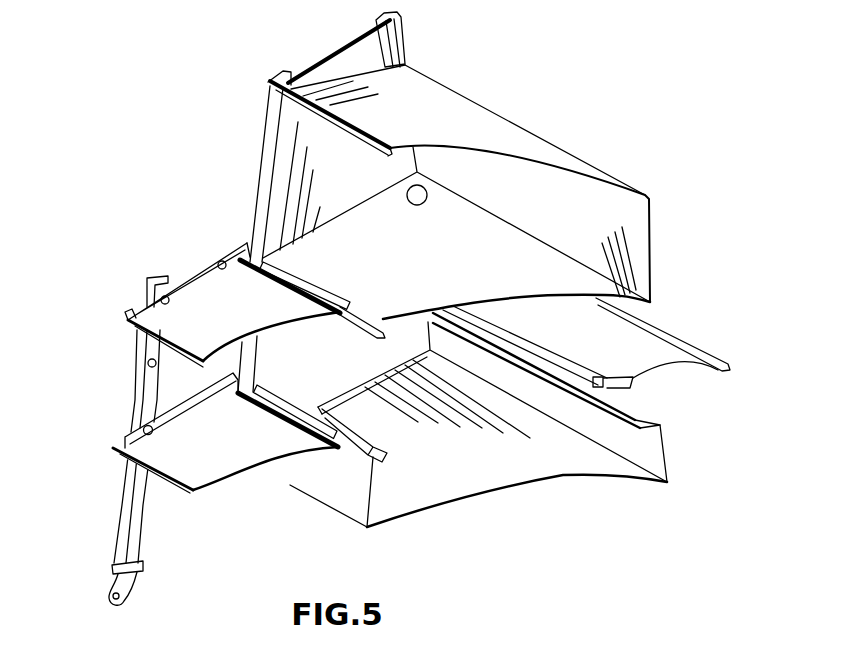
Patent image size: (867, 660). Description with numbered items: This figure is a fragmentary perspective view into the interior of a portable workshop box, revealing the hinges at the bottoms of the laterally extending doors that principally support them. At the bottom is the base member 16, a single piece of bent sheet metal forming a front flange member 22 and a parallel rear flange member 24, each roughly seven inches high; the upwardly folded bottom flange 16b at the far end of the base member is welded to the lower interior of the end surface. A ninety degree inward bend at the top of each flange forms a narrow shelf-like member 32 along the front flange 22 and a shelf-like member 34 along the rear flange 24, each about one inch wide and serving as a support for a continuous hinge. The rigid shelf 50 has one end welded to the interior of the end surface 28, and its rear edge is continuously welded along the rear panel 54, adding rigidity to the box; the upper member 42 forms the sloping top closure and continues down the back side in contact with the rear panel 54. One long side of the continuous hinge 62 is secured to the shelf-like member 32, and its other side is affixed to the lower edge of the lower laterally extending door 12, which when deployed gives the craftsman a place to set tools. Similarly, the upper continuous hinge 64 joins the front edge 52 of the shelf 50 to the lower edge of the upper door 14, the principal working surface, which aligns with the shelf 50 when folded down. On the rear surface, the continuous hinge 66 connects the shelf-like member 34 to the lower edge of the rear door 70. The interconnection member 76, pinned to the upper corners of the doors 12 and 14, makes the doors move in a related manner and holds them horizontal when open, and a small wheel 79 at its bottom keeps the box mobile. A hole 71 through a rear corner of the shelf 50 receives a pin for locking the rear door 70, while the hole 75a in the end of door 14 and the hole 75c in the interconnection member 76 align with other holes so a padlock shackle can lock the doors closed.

The lower laterally extending door 12 is at (173, 460).
The upper laterally extending door 14 is at (218, 290).
The base member 16 is at (417, 477).
The upwardly folded bottom flange 16b is at (326, 420).
The front flange member 22 is at (343, 475).
The rear flange member 24 is at (630, 443).
The end surface 28 is at (316, 190).
The shelf-like member 32 is at (353, 445).
The shelf-like member 34 is at (660, 426).
The upper member 42 is at (410, 103).
The rigid shelf 50 is at (547, 265).
The front edge of the rigid shelf 52 is at (363, 320).
The rear panel 54 is at (555, 188).
The continuous hinge 62 is at (264, 446).
The upper continuous hinge 64 is at (303, 278).
The continuous hinge 66 is at (612, 381).
The rear door 70 is at (628, 340).
The hole 71 is at (407, 192).
The hole 75a is at (217, 263).
The hole 75c is at (149, 361).
The interconnection member 76 is at (136, 402).
The small wheel 79 is at (104, 598).